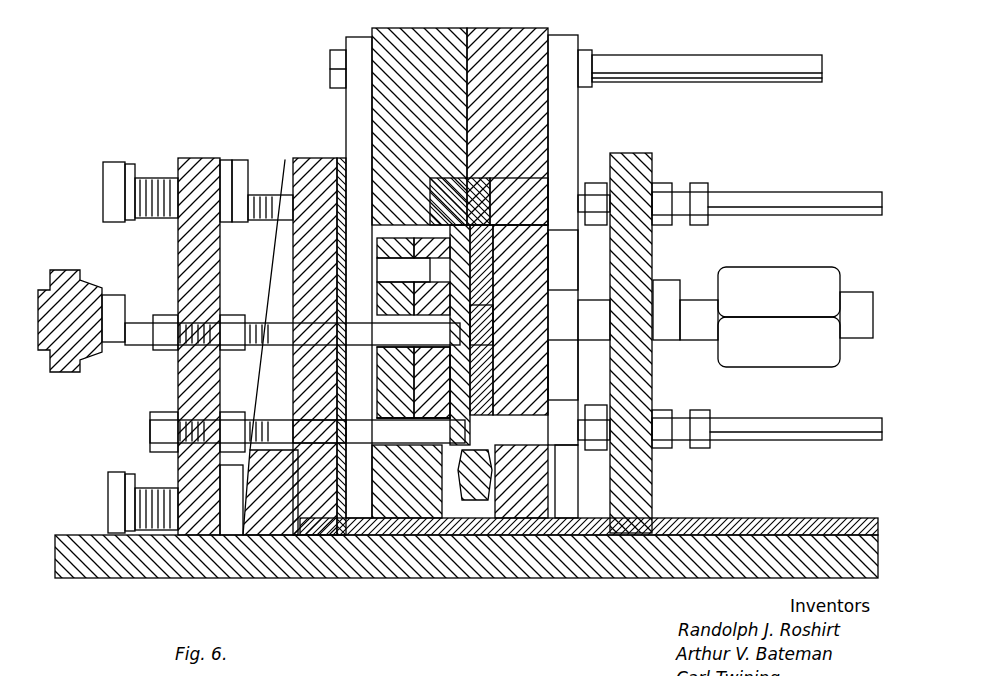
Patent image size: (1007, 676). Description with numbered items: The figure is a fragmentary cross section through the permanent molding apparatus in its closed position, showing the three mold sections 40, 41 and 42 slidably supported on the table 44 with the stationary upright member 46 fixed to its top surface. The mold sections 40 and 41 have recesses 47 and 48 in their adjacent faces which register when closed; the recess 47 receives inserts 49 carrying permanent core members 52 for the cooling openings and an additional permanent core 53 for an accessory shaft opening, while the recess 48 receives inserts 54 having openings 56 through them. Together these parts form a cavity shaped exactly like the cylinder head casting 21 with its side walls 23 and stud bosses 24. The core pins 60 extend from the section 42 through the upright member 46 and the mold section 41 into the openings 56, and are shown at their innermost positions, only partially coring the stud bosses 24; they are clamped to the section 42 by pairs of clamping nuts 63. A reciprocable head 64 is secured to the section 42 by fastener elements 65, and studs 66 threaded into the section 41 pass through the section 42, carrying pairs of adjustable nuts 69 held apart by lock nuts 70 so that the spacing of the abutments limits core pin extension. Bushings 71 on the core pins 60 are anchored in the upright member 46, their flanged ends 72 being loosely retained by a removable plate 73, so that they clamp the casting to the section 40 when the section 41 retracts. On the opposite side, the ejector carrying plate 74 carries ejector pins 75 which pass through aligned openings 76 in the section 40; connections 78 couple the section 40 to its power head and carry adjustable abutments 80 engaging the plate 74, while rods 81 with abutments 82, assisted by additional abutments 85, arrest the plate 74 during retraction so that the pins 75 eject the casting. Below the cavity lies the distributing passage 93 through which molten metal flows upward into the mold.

The lower section of cylinder head casting 21 is at (470, 192).
The side walls 23 is at (440, 450).
The stud bosses 24 is at (430, 405).
The permanent mold section 40 is at (522, 12).
The permanent mold section 41 is at (440, 12).
The mold section 42 is at (190, 158).
The table 44 is at (120, 565).
The upright member 46 is at (305, 262).
The recess 47 is at (520, 282).
The recess 48 is at (405, 300).
The inserts 49 is at (500, 330).
The permanent core members 52 is at (510, 262).
The permanent core 53 is at (540, 192).
The inserts 54 is at (425, 365).
The openings 56 is at (420, 413).
The core pins 60 is at (279, 347).
The clamping nuts 63 is at (236, 222).
The reciprocable head 64 is at (88, 282).
The fastener elements 65 is at (144, 300).
The studs 66 is at (265, 183).
The adjustable nuts 69 is at (129, 162).
The lock nuts 70 is at (108, 165).
The bushings 71 is at (355, 200).
The flange 72 is at (340, 418).
The removable plate 73 is at (339, 160).
The ejector carrying plate 74 is at (652, 166).
The ejector pins 75 is at (598, 195).
The openings 76 is at (566, 447).
The connections 78 is at (816, 280).
The adjustable abutments 80 is at (680, 285).
The rods 81 is at (796, 210).
The abutment 82 is at (700, 200).
The additional abutments 85 is at (705, 428).
The distributing passage 93 is at (472, 500).